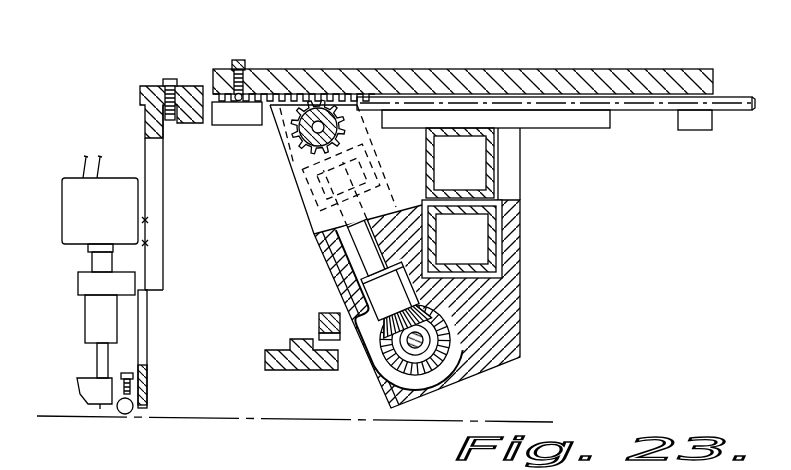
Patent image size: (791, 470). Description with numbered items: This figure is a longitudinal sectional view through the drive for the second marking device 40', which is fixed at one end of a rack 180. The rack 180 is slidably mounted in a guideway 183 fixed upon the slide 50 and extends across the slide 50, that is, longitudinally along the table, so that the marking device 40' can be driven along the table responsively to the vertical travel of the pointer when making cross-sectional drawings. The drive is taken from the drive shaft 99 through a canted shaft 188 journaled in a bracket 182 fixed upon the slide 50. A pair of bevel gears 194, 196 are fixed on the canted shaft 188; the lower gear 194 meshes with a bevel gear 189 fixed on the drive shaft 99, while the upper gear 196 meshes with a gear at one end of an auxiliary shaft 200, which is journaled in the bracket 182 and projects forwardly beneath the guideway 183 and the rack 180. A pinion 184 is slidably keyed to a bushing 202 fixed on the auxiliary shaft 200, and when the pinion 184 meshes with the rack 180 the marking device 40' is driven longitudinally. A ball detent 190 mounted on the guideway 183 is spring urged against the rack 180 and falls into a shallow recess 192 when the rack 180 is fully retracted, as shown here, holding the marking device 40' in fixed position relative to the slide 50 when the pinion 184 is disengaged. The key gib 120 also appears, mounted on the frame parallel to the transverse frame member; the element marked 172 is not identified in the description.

The second marking device 40' is at (73, 285).
The slide 50 is at (500, 185).
The drive shaft 99 is at (412, 338).
The key gib 120 is at (265, 367).
The stop block 172 is at (318, 320).
The rack 180 is at (185, 88).
The bracket 182 is at (523, 155).
The guideway 183 is at (380, 72).
The pinion 184 is at (303, 152).
The canted shaft 188 is at (370, 242).
The bevel gear 189 is at (513, 298).
The ball detent 190 is at (245, 62).
The shallow recess 192 is at (220, 70).
The lower bevel gear 194 is at (385, 285).
The upper bevel gear 196 is at (313, 187).
The auxiliary shaft 200 is at (300, 148).
The bushing 202 is at (316, 99).